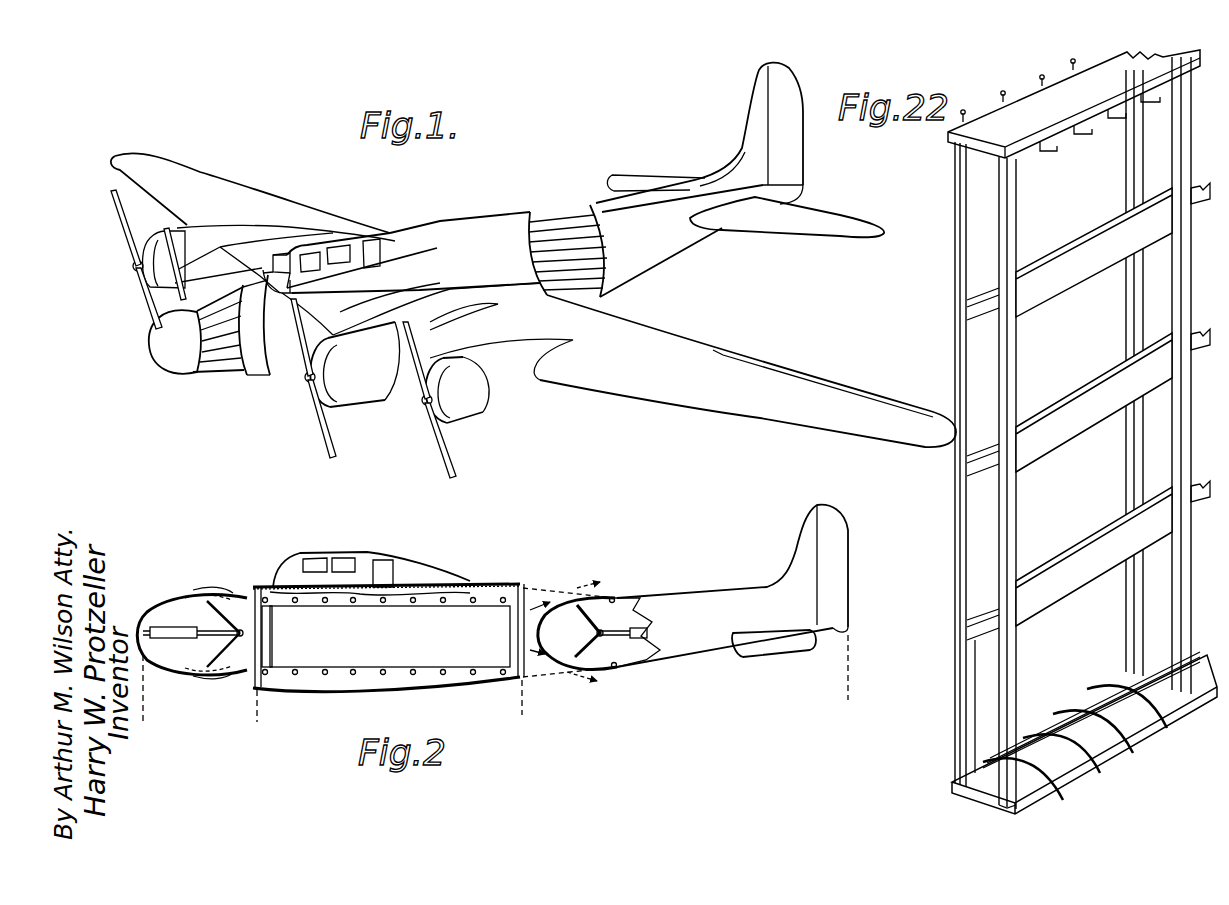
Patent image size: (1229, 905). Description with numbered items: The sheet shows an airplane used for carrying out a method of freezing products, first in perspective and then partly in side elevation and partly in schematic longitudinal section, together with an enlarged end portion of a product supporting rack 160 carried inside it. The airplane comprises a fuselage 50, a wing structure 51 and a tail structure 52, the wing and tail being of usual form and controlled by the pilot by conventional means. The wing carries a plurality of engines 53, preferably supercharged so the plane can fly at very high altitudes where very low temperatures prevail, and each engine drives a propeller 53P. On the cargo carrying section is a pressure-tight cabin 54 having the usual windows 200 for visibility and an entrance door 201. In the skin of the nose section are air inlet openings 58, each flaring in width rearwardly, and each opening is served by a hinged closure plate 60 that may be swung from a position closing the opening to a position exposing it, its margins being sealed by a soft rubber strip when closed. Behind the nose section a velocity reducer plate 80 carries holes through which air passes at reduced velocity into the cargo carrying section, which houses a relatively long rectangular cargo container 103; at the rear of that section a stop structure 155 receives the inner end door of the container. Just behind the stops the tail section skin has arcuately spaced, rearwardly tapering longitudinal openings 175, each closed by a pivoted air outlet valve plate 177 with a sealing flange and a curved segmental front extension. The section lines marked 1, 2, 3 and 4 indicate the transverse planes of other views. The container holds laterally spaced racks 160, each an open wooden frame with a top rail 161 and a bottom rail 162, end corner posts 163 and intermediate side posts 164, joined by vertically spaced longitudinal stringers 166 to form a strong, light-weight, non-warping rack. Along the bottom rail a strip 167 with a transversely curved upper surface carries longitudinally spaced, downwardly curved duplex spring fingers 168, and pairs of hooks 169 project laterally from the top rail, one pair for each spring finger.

In FIG. 1, the fuselage 50 is at (483, 208).
In FIG. 2, the fuselage 50 is at (478, 578).
In FIG. 1, the wing structure 51 is at (270, 171).
In FIG. 1, the tail structure 52 is at (806, 169).
In FIG. 2, the tail structure 52 is at (852, 594).
In FIG. 1, the engines 53 is at (133, 266).
In FIG. 1, the propeller 53P is at (128, 222).
In FIG. 1, the cabin 54 is at (347, 222).
In FIG. 2, the cabin 54 is at (398, 554).
In FIG. 2, the air inlet openings 58 is at (230, 590).
In FIG. 1, the closure plate 60 is at (232, 347).
In FIG. 2, the closure plate 60 is at (192, 635).
In FIG. 2, the velocity reducer plate 80 is at (280, 683).
In FIG. 2, the cargo container 103 is at (387, 636).
In FIG. 2, the stop structure 155 is at (518, 628).
In FIG. 2, the longitudinal openings 175 is at (565, 590).
In FIG. 1, the air outlet valve plate 177 is at (588, 252).
In FIG. 2, the air outlet valve plate 177 is at (600, 592).
In FIG. 1, the windows 200 is at (290, 272).
In FIG. 1, the entrance door 201 is at (375, 258).
In FIG. 2, the section line 1 is at (143, 699).
In FIG. 2, the section line 2 is at (257, 717).
In FIG. 2, the section line 3 is at (522, 708).
In FIG. 2, the section line 4 is at (845, 679).
In FIG. 22, the product supporting rack 160 is at (950, 138).
In FIG. 22, the top rail 161 is at (1030, 93).
In FIG. 22, the bottom rail 162 is at (1073, 780).
In FIG. 22, the end corner posts 163 is at (1014, 258).
In FIG. 22, the intermediate side posts 164 is at (1134, 178).
In FIG. 22, the longitudinal stringers 166 is at (1064, 277).
In FIG. 22, the strip 167 is at (1087, 700).
In FIG. 22, the duplex spring fingers 168 is at (1133, 740).
In FIG. 22, the hooks 169 is at (1086, 135).